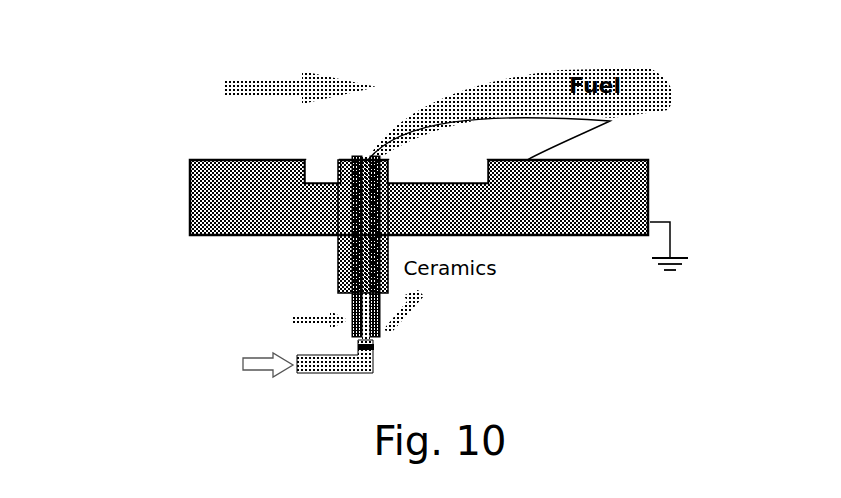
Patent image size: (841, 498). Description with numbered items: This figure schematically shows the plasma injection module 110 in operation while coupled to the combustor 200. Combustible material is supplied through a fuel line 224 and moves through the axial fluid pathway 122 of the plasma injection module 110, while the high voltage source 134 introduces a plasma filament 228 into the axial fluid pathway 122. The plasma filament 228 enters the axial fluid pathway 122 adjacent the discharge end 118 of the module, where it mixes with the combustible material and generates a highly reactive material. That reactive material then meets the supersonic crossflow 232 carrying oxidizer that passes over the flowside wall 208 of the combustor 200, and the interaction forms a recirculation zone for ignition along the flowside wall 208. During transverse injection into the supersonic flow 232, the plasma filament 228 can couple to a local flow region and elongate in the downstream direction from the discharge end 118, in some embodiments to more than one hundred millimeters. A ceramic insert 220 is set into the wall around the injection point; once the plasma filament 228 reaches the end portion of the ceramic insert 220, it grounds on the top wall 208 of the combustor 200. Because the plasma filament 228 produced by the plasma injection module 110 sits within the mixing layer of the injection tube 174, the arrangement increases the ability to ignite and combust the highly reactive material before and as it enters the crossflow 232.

The combustor 200 is at (668, 179).
The flowside wall 208 is at (193, 163).
The ceramic insert 220 is at (323, 183).
The discharge end 118 is at (366, 148).
The injection tube 174 is at (357, 200).
The plasma filament 228 is at (493, 122).
The supersonic crossflow 232 is at (238, 82).
The high voltage source 134 is at (293, 310).
The fuel line 224 is at (262, 377).
The plasma injection module 110 is at (405, 343).
The axial fluid pathway 122 is at (378, 349).